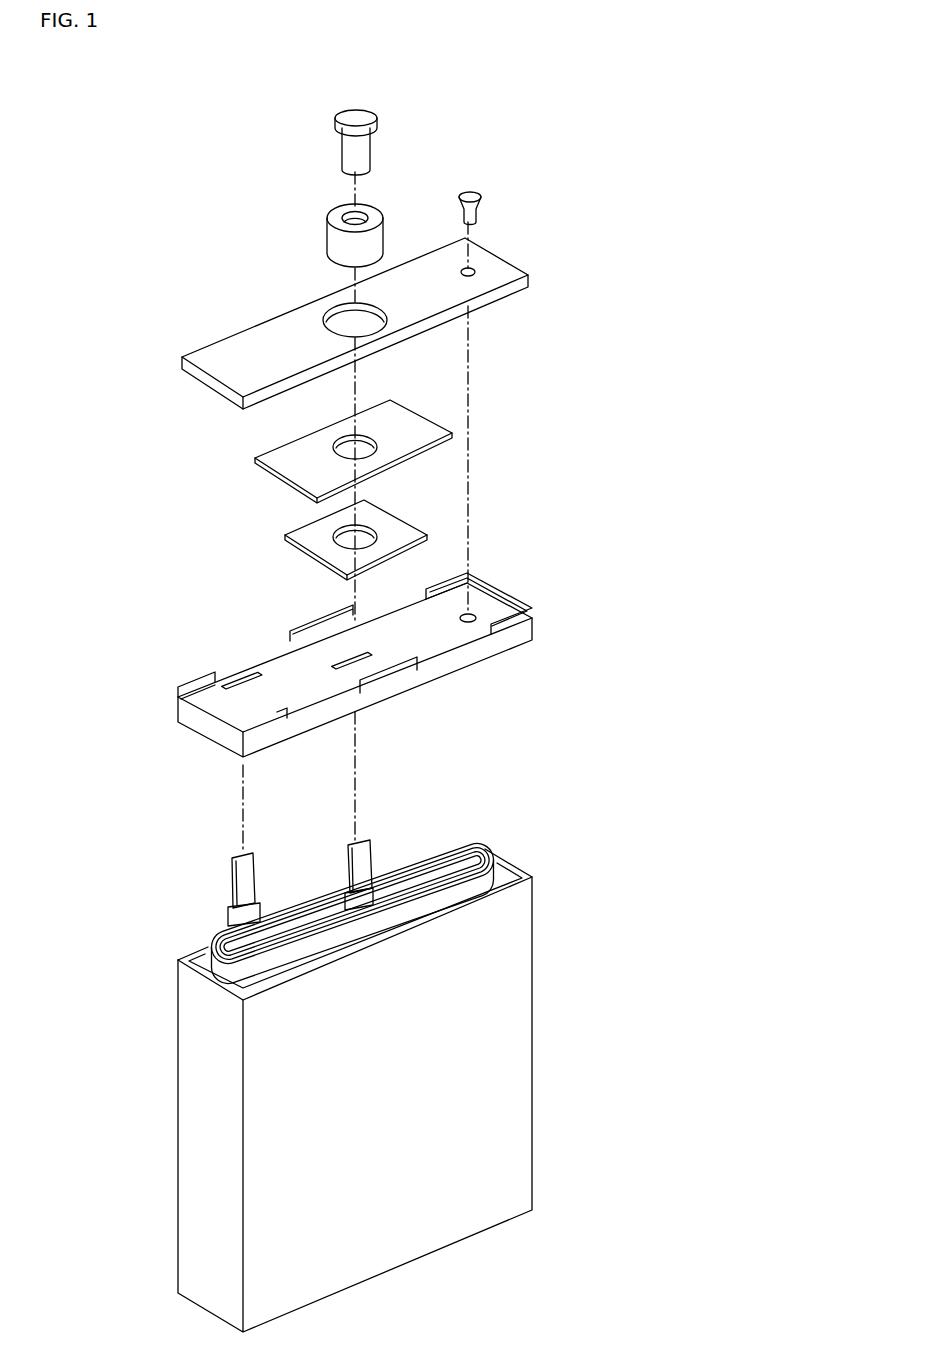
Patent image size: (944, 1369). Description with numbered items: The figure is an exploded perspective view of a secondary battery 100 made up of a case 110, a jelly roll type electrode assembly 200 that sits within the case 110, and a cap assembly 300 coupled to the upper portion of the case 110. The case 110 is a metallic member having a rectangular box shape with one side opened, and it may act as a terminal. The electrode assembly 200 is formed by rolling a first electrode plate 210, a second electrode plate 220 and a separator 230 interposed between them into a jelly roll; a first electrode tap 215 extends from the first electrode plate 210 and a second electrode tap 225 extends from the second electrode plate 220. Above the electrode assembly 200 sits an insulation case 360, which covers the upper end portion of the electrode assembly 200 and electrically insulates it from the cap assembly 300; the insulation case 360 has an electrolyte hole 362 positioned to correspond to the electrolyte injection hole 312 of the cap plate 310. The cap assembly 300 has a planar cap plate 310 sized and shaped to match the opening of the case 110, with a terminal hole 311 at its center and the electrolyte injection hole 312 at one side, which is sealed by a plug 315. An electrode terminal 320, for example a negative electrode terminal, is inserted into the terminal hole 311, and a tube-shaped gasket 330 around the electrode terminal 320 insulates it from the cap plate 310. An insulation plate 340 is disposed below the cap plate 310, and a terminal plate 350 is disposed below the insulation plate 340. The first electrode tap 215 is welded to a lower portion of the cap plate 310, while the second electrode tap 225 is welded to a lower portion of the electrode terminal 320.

The secondary battery 100 is at (547, 117).
The case 110 is at (510, 915).
The electrode assembly 200 is at (187, 838).
The first electrode plate 210 is at (483, 852).
The second electrode plate 220 is at (441, 846).
The separator 230 is at (467, 849).
The first electrode tap 215 is at (243, 878).
The second electrode tap 225 is at (360, 860).
The cap assembly 300 is at (553, 296).
The cap plate 310 is at (512, 260).
The terminal hole 311 is at (325, 302).
The electrolyte injection hole 312 is at (473, 270).
The plug 315 is at (474, 191).
The electrode terminal 320 is at (343, 123).
The gasket 330 is at (333, 220).
The insulation plate 340 is at (297, 467).
The terminal plate 350 is at (322, 538).
The insulation case 360 is at (193, 675).
The electrolyte hole 362 is at (475, 617).